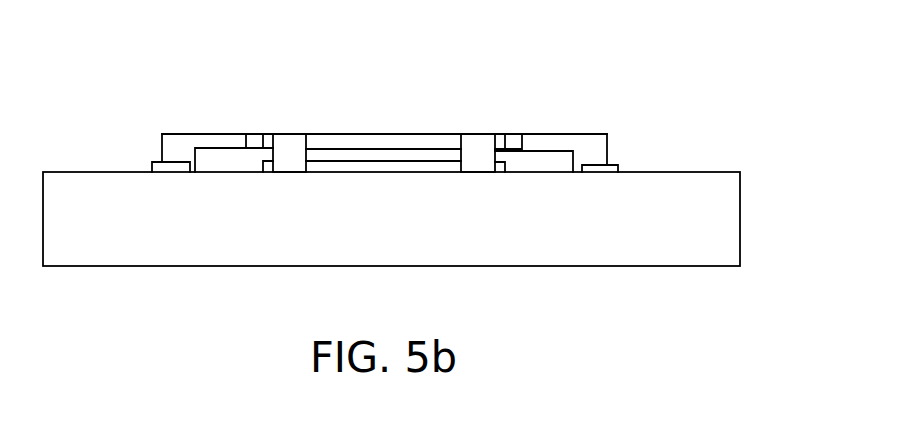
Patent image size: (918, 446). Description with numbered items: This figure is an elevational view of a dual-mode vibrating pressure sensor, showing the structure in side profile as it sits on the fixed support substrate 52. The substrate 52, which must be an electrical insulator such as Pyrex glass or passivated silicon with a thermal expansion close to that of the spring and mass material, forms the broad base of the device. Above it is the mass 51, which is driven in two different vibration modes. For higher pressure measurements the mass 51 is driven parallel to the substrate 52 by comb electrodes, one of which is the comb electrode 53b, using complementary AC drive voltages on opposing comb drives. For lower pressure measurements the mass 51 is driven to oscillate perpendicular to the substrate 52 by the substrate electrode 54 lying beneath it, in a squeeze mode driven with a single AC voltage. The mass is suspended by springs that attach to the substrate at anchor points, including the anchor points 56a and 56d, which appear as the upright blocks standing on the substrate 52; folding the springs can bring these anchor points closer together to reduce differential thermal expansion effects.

The mass 51 is at (375, 138).
The fixed support substrate 52 is at (68, 247).
The comb electrode 53b is at (232, 138).
The substrate electrode 54 is at (393, 164).
The anchor point 56a is at (474, 158).
The anchor point 56d is at (290, 160).